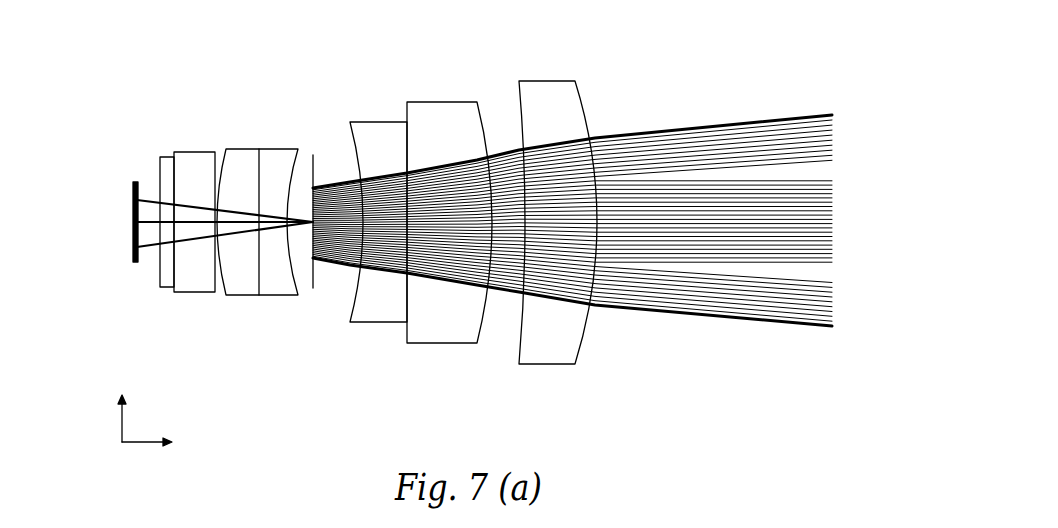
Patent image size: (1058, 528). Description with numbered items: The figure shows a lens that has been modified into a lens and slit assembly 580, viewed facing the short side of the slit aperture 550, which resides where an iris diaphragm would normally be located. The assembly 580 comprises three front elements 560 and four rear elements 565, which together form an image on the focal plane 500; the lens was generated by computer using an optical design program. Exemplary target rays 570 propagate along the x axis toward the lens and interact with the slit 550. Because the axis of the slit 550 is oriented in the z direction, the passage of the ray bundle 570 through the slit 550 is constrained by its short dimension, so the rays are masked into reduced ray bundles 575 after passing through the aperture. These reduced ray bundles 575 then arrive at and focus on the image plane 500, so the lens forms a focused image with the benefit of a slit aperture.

The focal plane 500 is at (133, 180).
The slit aperture 550 is at (322, 163).
The front elements 560 is at (575, 382).
The rear elements 565 is at (297, 295).
The target rays 570 is at (725, 320).
The reduced ray bundles 575 is at (152, 247).
The lens and slit assembly 580 is at (580, 75).